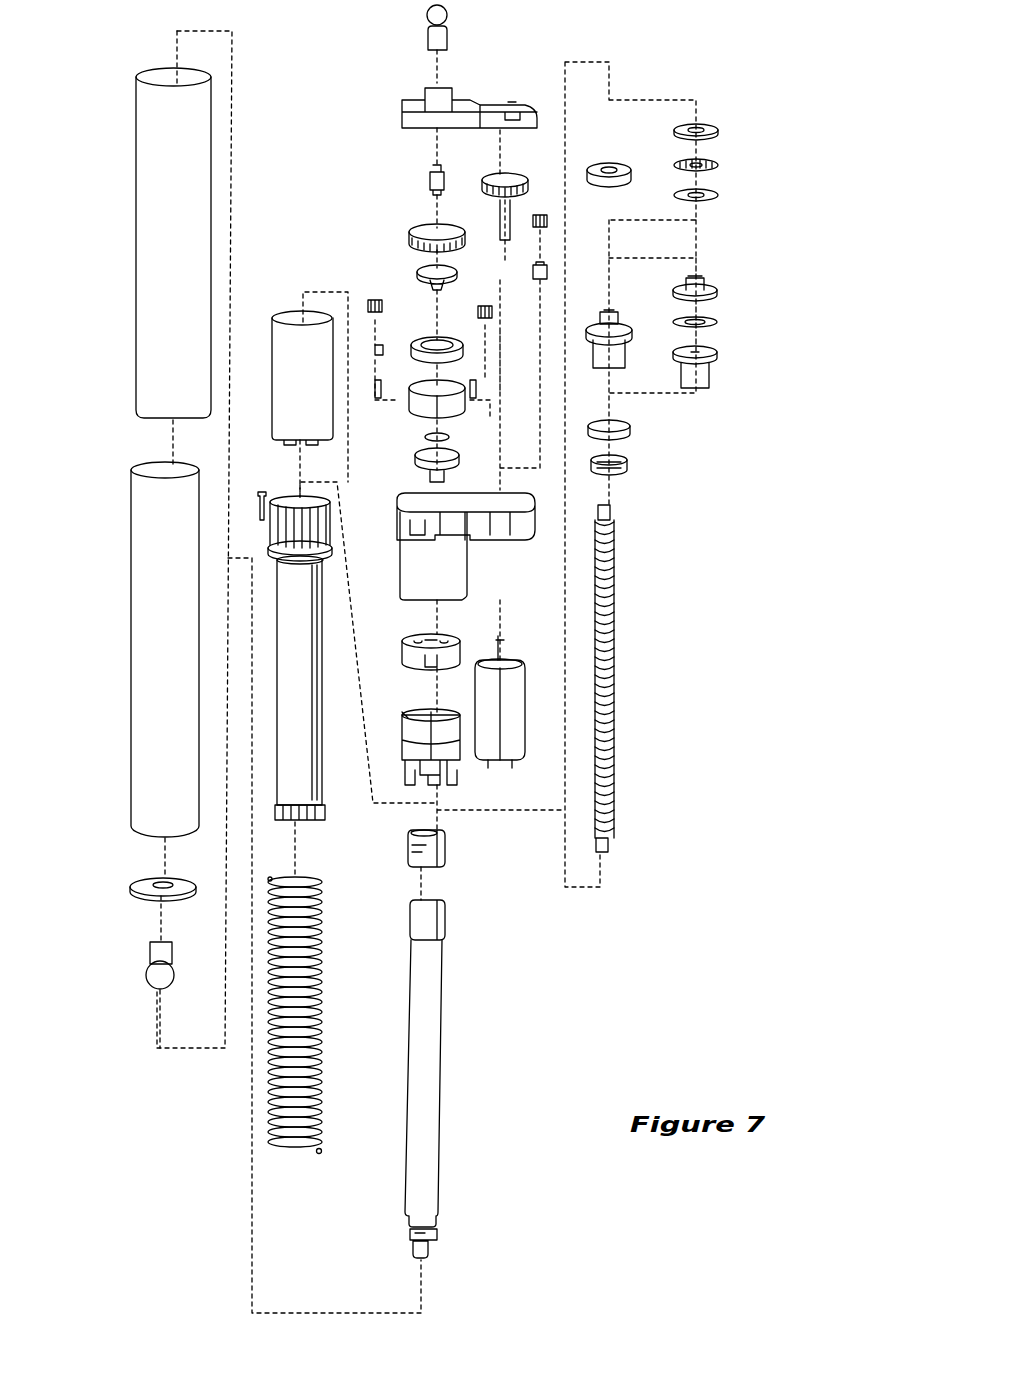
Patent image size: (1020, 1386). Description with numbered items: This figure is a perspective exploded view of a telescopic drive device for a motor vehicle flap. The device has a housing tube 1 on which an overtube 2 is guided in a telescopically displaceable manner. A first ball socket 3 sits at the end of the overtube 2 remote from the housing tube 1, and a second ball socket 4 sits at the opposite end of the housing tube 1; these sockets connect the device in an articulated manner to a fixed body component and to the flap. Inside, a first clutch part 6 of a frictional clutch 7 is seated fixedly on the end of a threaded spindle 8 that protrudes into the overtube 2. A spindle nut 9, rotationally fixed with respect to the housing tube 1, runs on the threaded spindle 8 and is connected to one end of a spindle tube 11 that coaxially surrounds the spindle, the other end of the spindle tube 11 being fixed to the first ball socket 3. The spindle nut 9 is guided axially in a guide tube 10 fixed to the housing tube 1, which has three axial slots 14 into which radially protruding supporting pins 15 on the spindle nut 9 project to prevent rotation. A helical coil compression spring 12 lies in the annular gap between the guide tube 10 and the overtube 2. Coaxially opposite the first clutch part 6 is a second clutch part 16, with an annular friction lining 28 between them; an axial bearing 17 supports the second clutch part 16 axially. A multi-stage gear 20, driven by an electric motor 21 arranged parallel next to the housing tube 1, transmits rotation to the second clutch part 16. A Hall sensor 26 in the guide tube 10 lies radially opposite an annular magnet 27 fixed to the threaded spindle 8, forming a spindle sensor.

The housing tube 1 is at (147, 268).
The overtube 2 is at (146, 733).
The first ball socket 3 is at (155, 985).
The second ball socket 4 is at (447, 15).
The first clutch part 6 is at (715, 355).
The frictional clutch 7 is at (639, 378).
The threaded spindle 8 is at (618, 650).
The spindle nut 9 is at (447, 855).
The guide tube 10 is at (283, 385).
The spindle tube 11 is at (425, 1150).
The helical coil compression spring 12 is at (272, 1110).
The axial slots 14 is at (270, 769).
The supporting pins 15 is at (447, 860).
The second clutch part 16 is at (705, 285).
The axial bearing 17 is at (684, 115).
The gear 20 is at (416, 614).
The electric motor 21 is at (515, 722).
The Hall sensor 26 is at (258, 495).
The annular magnet 27 is at (630, 435).
The annular friction lining 28 is at (720, 322).